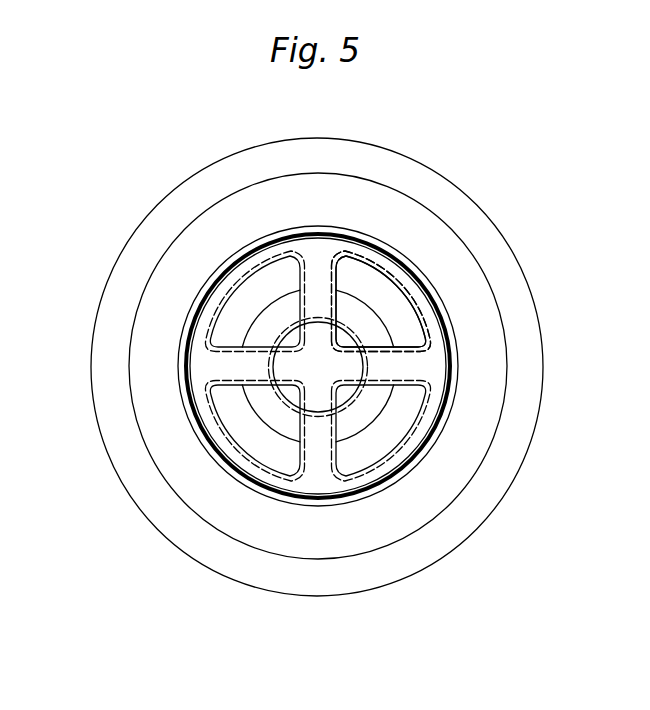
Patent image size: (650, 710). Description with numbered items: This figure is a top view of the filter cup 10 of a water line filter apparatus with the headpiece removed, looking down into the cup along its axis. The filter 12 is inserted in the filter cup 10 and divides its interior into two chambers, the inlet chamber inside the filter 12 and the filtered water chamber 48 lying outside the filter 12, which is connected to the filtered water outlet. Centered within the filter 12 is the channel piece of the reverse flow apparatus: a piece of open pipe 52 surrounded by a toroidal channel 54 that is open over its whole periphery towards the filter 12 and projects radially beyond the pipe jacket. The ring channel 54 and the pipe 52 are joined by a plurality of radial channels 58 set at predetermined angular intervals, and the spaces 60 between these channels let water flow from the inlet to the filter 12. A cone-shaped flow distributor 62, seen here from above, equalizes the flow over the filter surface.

The filter cup 10 is at (115, 333).
The filter 12 is at (452, 388).
The filtered water chamber 48 is at (240, 213).
The pipe 52 is at (267, 403).
The toroidal channel 54 is at (203, 318).
The radial channels 58 is at (403, 362).
The spaces 60 is at (403, 312).
The flow distributor 62 is at (325, 355).